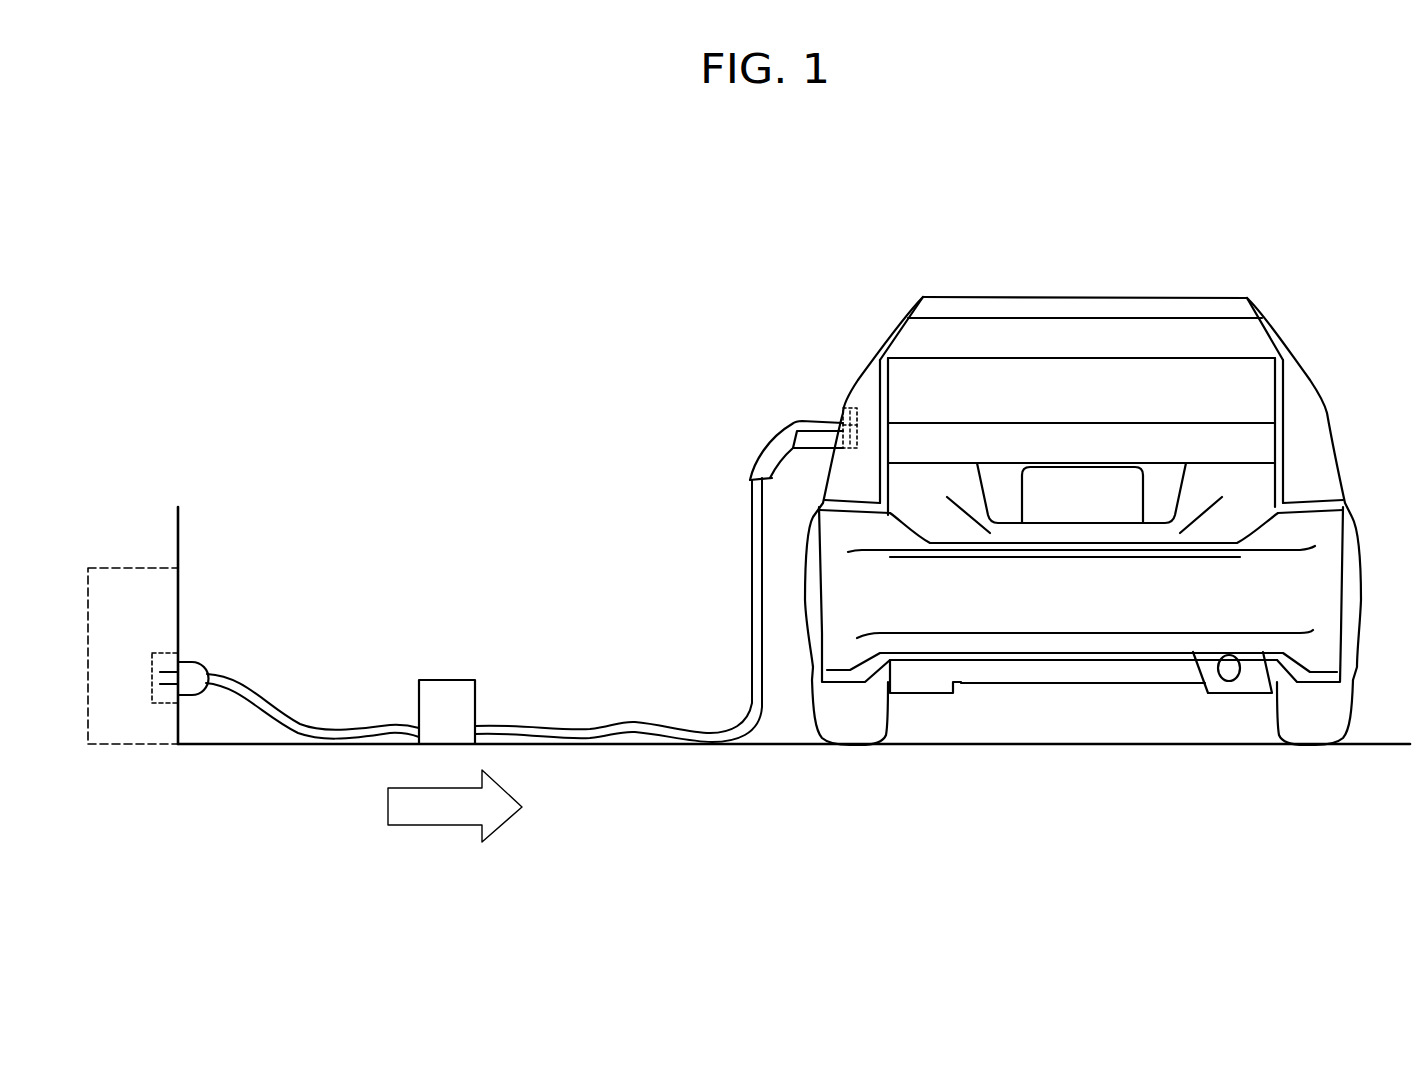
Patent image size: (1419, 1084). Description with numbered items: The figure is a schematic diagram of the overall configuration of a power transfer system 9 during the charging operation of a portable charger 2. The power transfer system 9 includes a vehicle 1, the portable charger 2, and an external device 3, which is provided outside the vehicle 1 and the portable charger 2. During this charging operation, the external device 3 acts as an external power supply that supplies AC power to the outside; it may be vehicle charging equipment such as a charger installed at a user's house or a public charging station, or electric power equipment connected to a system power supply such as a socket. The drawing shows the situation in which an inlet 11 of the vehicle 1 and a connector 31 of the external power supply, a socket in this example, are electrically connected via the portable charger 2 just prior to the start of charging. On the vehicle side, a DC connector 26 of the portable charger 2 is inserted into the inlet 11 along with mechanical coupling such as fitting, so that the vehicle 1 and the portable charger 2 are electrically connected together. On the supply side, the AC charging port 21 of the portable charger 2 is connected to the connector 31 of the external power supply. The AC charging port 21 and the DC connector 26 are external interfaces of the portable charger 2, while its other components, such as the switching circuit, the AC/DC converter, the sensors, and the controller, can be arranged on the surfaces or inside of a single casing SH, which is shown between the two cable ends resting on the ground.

The power transfer system 9 is at (268, 177).
The vehicle 1 is at (1238, 272).
The inlet 11 is at (843, 406).
The DC connector 26 is at (768, 452).
The portable charger 2 is at (390, 560).
The AC charging port 21 is at (199, 662).
The casing SH is at (445, 680).
The external device 3 is at (131, 566).
The connector 31 is at (167, 652).